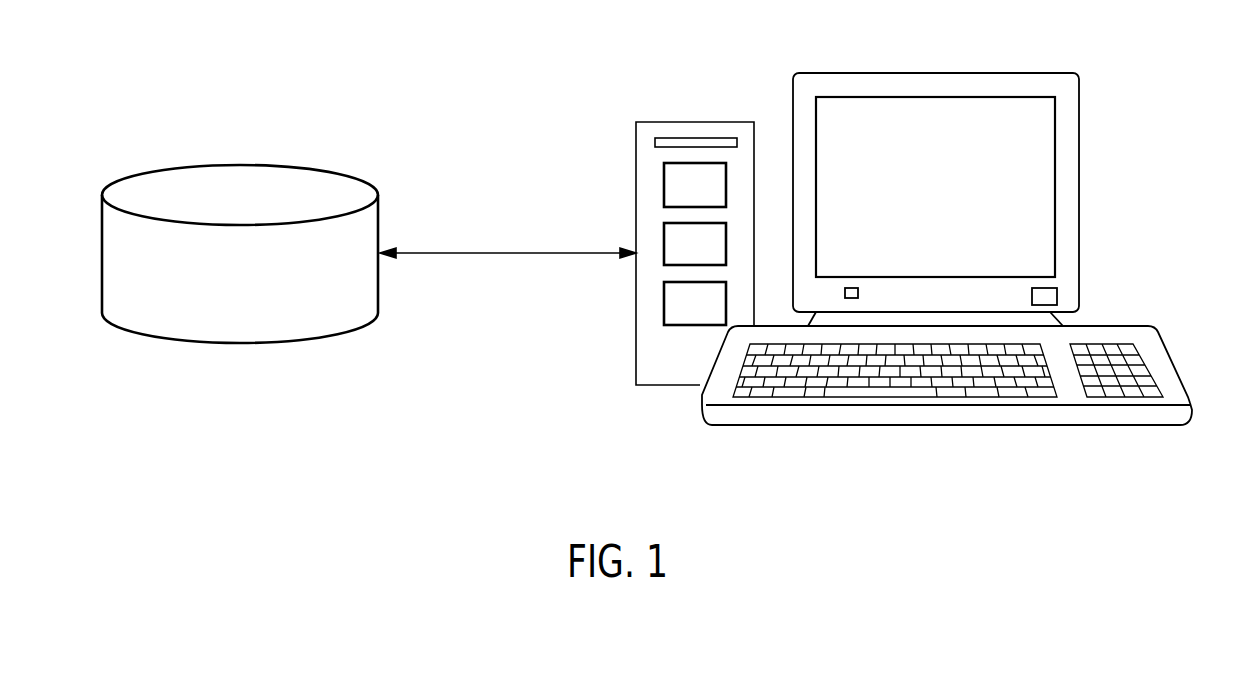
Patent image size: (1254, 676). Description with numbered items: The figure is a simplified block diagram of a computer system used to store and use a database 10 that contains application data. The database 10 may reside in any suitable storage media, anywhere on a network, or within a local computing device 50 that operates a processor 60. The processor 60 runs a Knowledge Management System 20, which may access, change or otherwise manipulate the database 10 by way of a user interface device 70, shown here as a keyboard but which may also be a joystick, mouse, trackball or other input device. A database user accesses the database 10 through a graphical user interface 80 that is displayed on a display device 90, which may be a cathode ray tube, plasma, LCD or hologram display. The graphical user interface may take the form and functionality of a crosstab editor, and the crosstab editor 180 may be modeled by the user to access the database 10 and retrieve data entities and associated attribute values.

The database 10 is at (233, 165).
The local computing device 50 is at (693, 108).
The processor 60 is at (664, 187).
The crosstab GUI 180 is at (664, 236).
The Knowledge Management System 20 is at (664, 305).
The graphical user interface 80 is at (936, 113).
The display device 90 is at (988, 178).
The user interface device 70 is at (1175, 352).